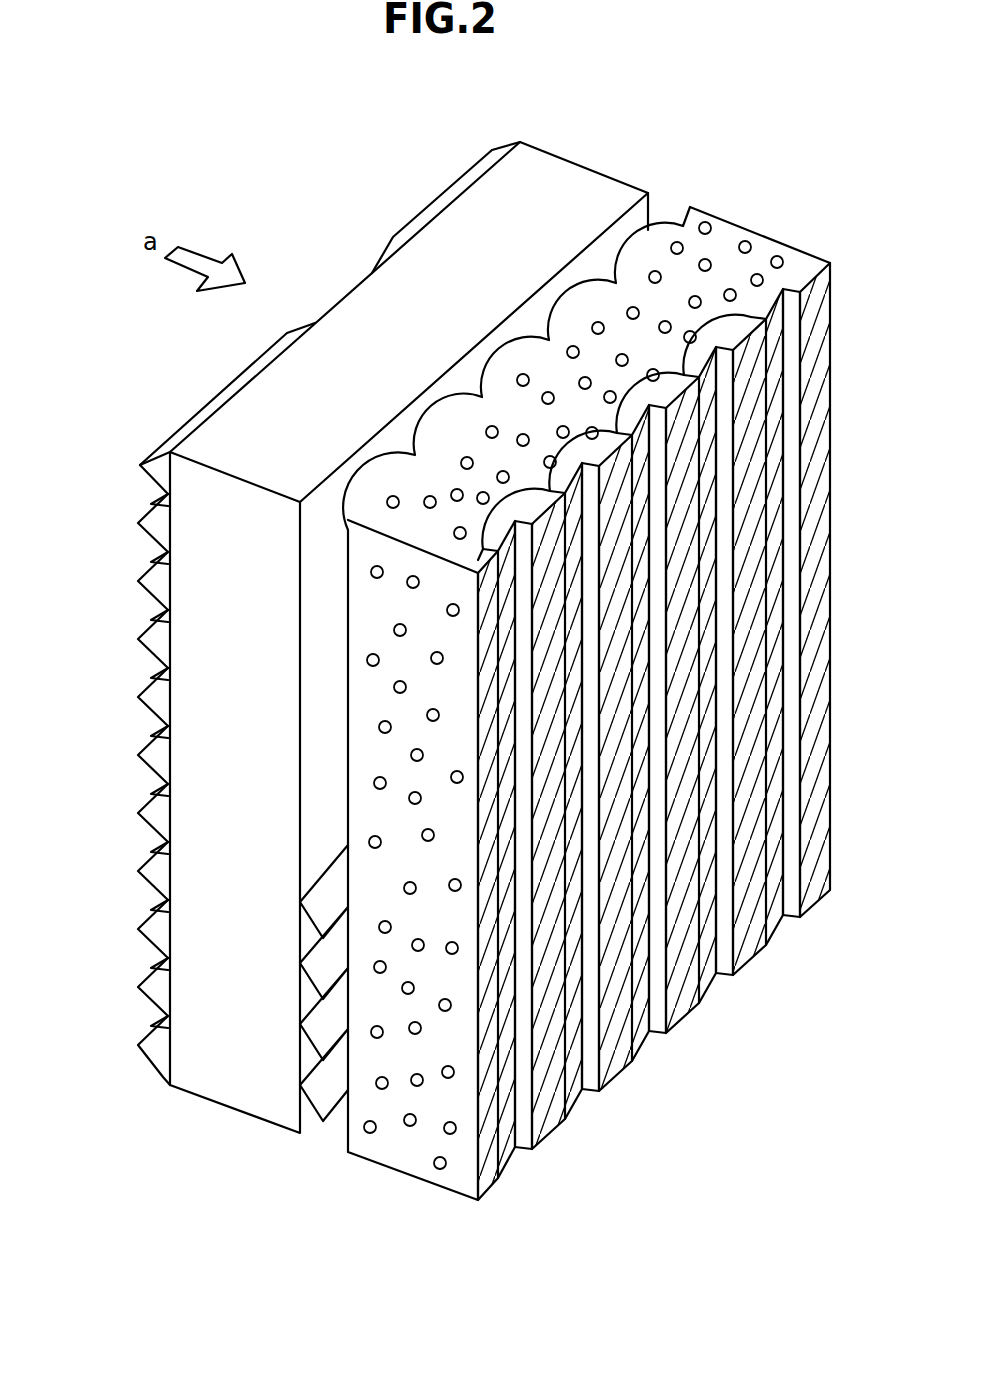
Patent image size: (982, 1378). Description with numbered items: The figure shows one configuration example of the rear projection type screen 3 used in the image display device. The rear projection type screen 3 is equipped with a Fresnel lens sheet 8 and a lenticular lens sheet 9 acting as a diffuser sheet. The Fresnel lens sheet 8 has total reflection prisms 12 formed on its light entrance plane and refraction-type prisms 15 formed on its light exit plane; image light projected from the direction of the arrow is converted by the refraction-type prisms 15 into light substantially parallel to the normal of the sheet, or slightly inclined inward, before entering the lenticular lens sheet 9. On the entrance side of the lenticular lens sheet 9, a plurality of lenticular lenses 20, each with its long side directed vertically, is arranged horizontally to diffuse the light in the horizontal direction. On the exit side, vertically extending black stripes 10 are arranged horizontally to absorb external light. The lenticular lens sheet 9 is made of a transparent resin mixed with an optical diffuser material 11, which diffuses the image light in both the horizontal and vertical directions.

The rear projection type screen 3 is at (353, 722).
The Fresnel lens sheet 8 is at (223, 1073).
The lenticular lens sheet 9 is at (408, 1155).
The black stripes 10 is at (673, 985).
The optical diffuser material 11 is at (458, 1127).
The total reflection prism 12 is at (160, 642).
The refraction-type prism 15 is at (315, 1113).
The lenticular lenses 20 is at (660, 257).